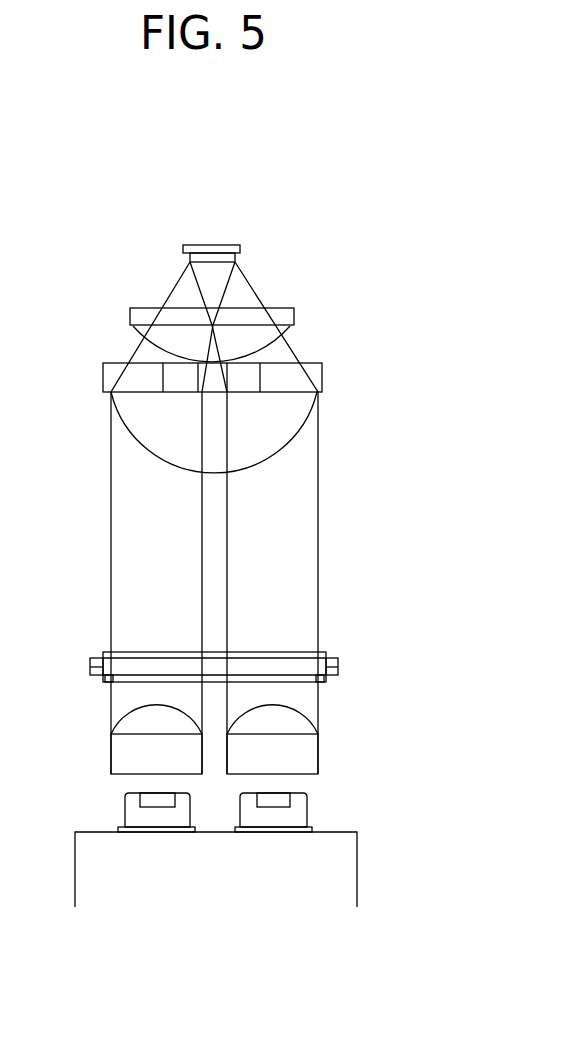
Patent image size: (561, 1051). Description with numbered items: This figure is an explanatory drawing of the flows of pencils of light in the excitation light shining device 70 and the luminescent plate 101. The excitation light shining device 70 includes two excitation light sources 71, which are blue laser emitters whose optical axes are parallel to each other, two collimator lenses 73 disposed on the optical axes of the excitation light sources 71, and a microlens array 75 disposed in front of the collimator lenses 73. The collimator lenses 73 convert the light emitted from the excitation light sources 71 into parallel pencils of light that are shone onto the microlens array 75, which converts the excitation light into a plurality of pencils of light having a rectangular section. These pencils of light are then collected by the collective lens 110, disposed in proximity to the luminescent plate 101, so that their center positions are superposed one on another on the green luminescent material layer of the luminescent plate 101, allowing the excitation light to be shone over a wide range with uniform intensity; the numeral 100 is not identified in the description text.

The light receiving optical system 100 is at (183, 230).
The luminescent plate 101 is at (212, 258).
The collective lens 110 is at (264, 303).
The microlens array 75 is at (128, 665).
The collimator lenses 73 is at (137, 723).
The excitation light source 71 is at (255, 818).
The excitation light shining device 70 is at (116, 888).